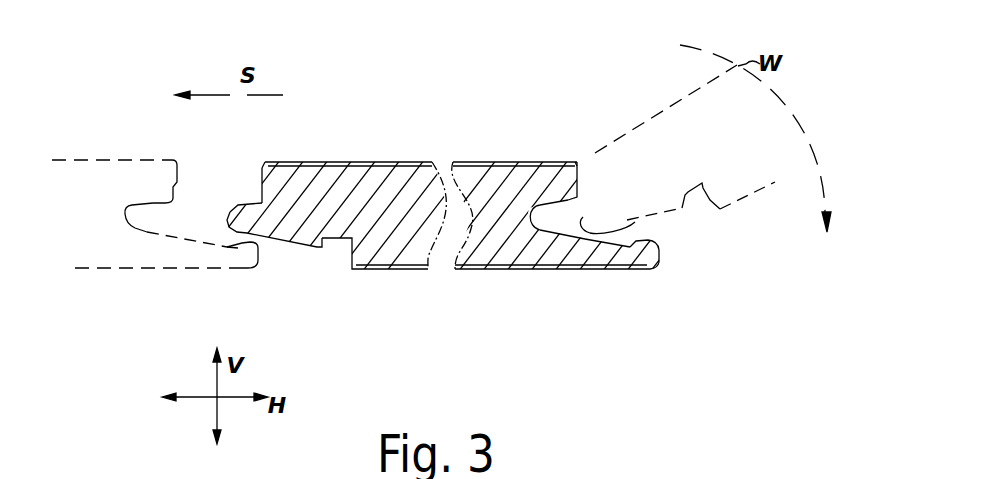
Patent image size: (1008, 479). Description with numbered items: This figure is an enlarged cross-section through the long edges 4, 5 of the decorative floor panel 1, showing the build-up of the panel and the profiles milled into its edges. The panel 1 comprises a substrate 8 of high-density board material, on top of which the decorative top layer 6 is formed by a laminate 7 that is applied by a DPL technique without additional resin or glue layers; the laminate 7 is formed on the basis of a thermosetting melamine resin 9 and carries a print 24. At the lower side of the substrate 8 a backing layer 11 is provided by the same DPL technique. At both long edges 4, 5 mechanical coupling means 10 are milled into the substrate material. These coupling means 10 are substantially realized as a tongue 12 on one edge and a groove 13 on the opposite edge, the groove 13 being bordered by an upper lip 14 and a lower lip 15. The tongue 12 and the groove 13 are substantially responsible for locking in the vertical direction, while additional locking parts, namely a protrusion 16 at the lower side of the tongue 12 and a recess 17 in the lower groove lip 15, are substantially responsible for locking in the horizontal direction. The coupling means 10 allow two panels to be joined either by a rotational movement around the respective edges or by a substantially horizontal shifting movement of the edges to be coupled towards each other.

The floor panel 1 is at (398, 321).
The long edge 4 is at (224, 205).
The long edge 5 is at (724, 178).
The decorative top layer 6 is at (302, 162).
The laminate 7 is at (360, 162).
The substrate 8 is at (497, 232).
The melamine resin 9 is at (497, 162).
The mechanical coupling means 10 is at (668, 181).
The backing layer 11 is at (470, 267).
The tongue 12 is at (277, 225).
The groove 13 is at (598, 220).
The upper lip 14 is at (548, 218).
The lower lip 15 is at (583, 253).
The protrusion 16 is at (304, 248).
The recess 17 is at (632, 245).
The print 24 is at (267, 163).